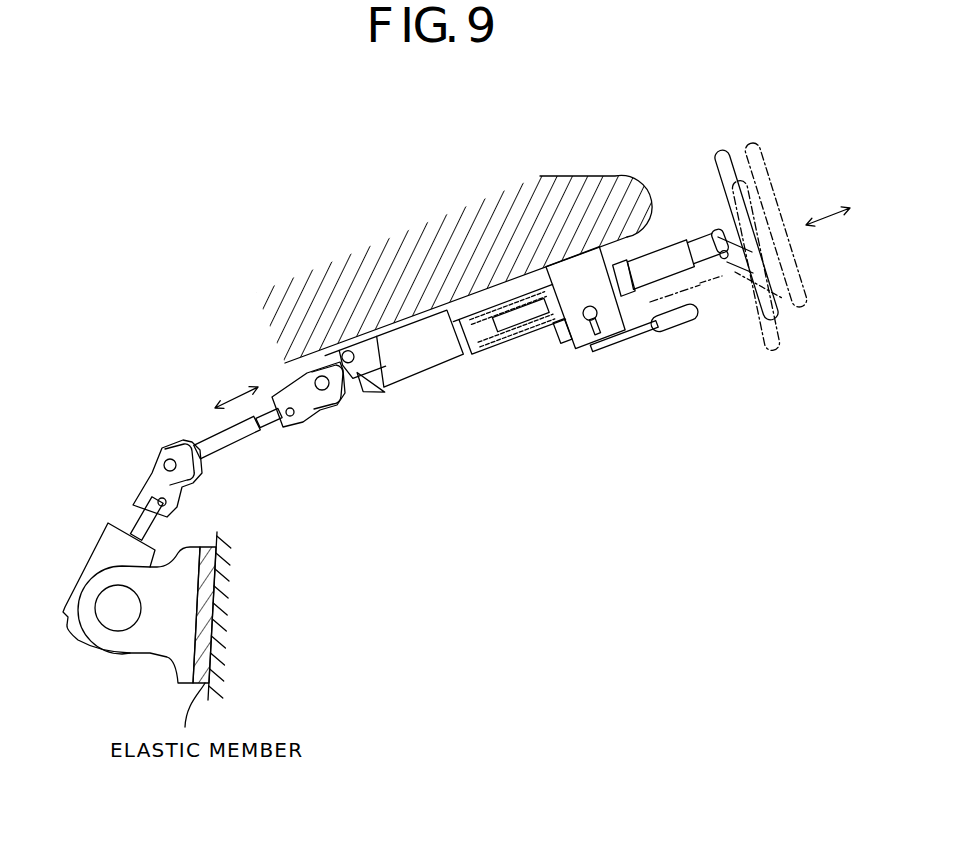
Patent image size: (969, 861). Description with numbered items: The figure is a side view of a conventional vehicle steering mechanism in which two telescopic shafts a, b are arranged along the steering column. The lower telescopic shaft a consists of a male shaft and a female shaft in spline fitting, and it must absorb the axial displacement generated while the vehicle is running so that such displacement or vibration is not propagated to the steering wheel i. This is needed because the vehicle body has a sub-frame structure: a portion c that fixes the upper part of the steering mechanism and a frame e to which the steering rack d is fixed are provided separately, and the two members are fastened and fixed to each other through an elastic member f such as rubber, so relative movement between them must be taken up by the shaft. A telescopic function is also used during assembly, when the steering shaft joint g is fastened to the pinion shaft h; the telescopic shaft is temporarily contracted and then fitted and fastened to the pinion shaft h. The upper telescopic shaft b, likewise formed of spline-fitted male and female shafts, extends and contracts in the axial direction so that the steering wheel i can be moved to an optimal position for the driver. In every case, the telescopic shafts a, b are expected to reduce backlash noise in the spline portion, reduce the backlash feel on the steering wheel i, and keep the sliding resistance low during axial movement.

The telescopic shaft a is at (240, 441).
The telescopic shaft b is at (512, 339).
The portion for fixing an upper part of the steering mechanism c is at (470, 240).
The steering rack d is at (110, 610).
The frame e is at (230, 617).
The elastic member f is at (210, 572).
The steering shaft joint g is at (142, 488).
The pinion shaft h is at (138, 520).
The steering wheel i is at (726, 156).